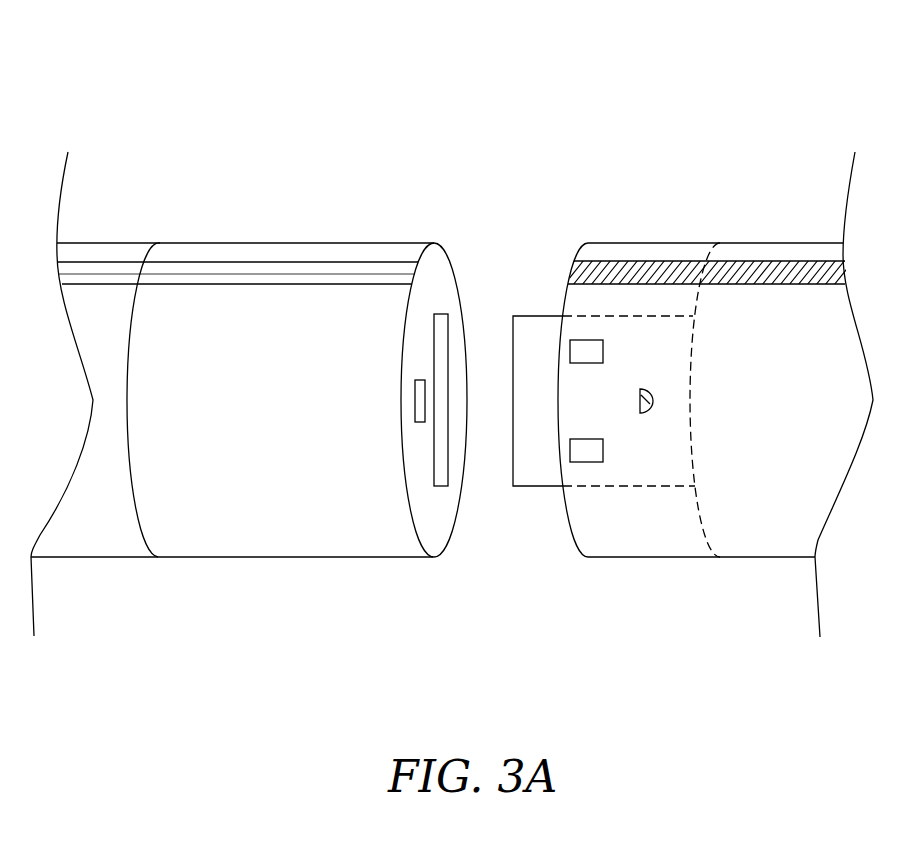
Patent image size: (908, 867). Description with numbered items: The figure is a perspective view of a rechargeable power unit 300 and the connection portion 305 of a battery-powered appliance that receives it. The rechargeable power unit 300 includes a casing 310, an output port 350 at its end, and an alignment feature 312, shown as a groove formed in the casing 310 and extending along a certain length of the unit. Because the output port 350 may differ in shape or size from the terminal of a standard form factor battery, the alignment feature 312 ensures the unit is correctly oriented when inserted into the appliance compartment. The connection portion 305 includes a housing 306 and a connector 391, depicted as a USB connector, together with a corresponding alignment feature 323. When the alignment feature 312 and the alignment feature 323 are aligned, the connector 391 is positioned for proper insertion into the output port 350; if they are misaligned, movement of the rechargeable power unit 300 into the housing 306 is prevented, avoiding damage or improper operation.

The rechargeable power unit 300 is at (308, 88).
The connection portion 305 is at (777, 143).
The housing 306 is at (752, 558).
The casing 310 is at (103, 558).
The alignment feature 312 is at (373, 262).
The alignment feature 323 is at (744, 273).
The output port 350 is at (448, 328).
The connector 391 is at (620, 488).